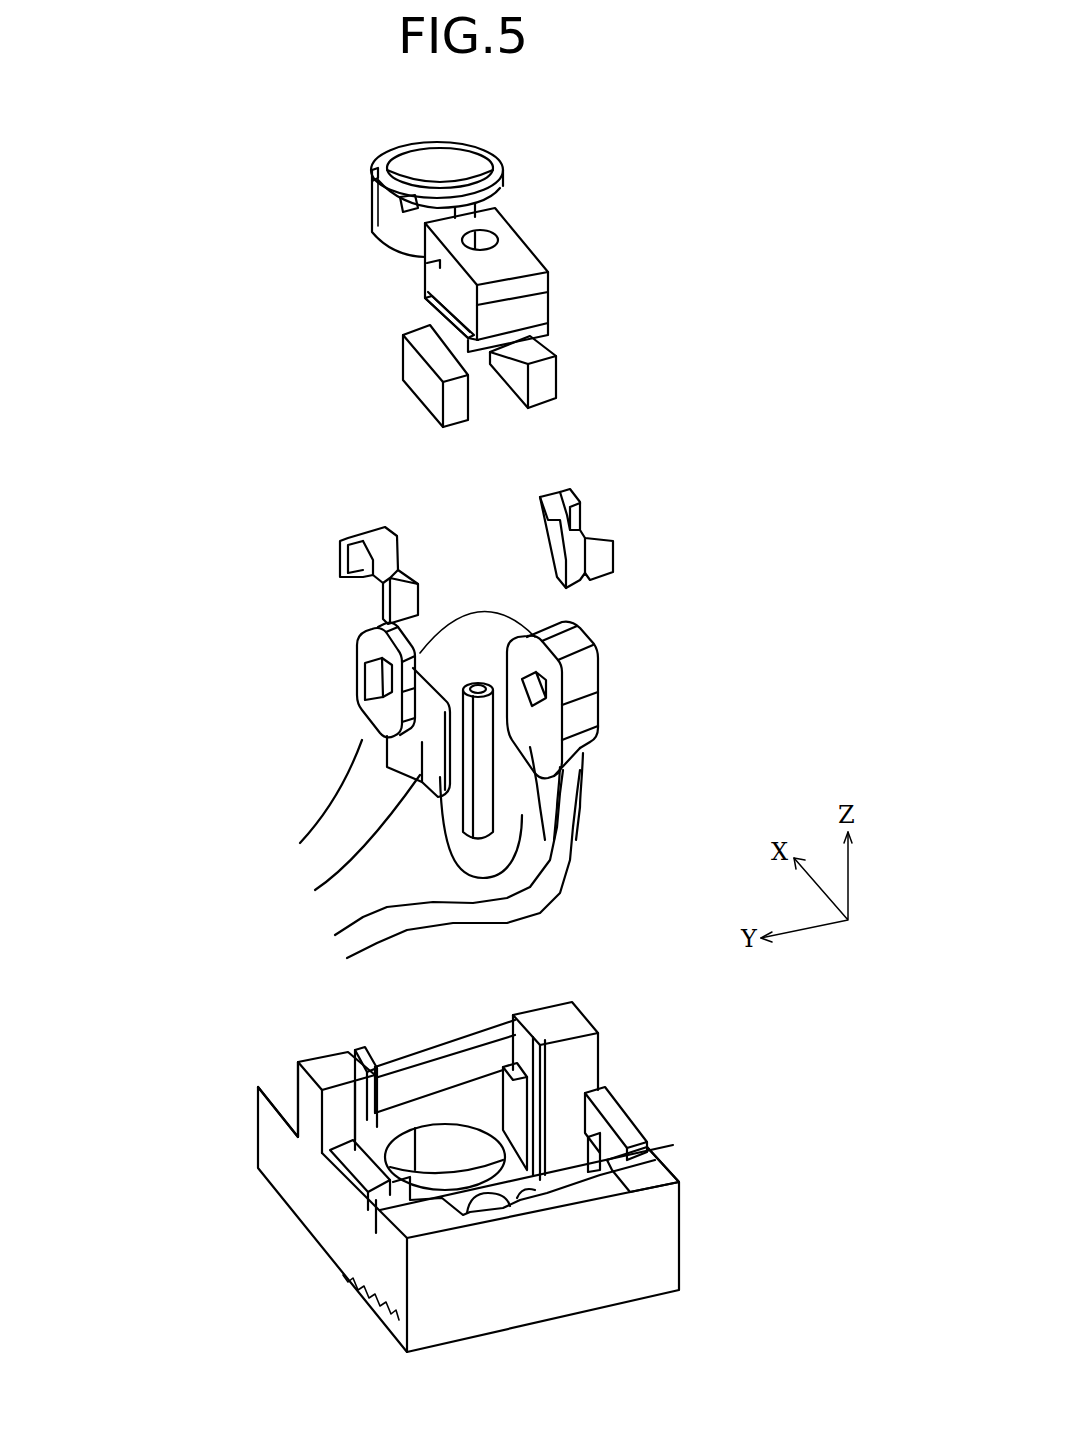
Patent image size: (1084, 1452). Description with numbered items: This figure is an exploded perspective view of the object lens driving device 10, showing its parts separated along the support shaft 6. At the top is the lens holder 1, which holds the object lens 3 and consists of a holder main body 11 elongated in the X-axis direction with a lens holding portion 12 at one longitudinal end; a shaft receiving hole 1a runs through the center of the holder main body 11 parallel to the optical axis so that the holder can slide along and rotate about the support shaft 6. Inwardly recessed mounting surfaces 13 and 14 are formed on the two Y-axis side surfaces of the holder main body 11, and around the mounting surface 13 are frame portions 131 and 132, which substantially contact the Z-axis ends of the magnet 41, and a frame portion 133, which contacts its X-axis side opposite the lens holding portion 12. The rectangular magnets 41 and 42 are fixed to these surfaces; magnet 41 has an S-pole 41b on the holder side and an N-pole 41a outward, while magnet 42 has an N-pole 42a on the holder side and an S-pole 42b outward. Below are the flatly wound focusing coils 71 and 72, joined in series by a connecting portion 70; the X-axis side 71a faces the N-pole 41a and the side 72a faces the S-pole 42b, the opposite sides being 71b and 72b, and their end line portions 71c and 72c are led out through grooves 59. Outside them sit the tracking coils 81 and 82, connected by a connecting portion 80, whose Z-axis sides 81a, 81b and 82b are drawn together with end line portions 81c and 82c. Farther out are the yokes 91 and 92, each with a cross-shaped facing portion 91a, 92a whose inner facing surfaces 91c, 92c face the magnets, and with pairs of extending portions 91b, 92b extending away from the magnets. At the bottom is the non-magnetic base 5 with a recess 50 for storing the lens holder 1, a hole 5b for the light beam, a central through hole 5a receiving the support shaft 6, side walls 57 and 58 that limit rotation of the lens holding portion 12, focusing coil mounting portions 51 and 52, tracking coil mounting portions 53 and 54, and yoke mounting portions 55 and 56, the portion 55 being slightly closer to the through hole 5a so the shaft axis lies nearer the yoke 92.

The lens holder 1 is at (270, 306).
The shaft receiving hole 1a is at (500, 238).
The object lens 3 is at (443, 155).
The base 5 is at (647, 1272).
The through hole 5a is at (490, 1207).
The hole 5b is at (448, 1143).
The support shaft 6 is at (488, 796).
The object lens driving device 10 is at (657, 222).
The holder main body 11 is at (548, 283).
The lens holding portion 12 is at (503, 167).
The mounting surface 13 is at (435, 292).
The mounting surface 14 is at (547, 331).
The magnet 41 is at (445, 426).
The N-pole 41a is at (404, 352).
The S-pole 41b is at (472, 408).
The magnet 42 is at (548, 404).
The N-pole 42a is at (522, 392).
The S-pole 42b is at (556, 372).
The recess 50 is at (557, 1207).
The focusing coil mounting portion 51 is at (350, 1068).
The focusing coil mounting portion 52 is at (532, 1112).
The tracking coil mounting portion 53 is at (370, 1190).
The tracking coil mounting portion 54 is at (640, 1177).
The yoke mounting portion 55 is at (333, 1150).
The yoke mounting portion 56 is at (633, 1147).
The side wall 57 is at (372, 1050).
The side wall 58 is at (513, 1035).
The groove 59 is at (355, 1303).
The connecting portion 70 is at (462, 867).
The focusing coil 71 is at (385, 763).
The side 71a is at (420, 692).
The side 71b is at (407, 767).
The end line portion 71c is at (337, 877).
The focusing coil 72 is at (567, 783).
The side 72a is at (527, 670).
The side 72b is at (533, 748).
The end line portion 72c is at (335, 935).
The connecting portion 80 is at (477, 612).
The tracking coil 81 is at (335, 662).
The side 81a is at (382, 706).
The side 81b is at (385, 675).
The end line portion 81c is at (312, 828).
The tracking coil 82 is at (603, 668).
The side 82b is at (600, 712).
The end line portion 82c is at (347, 958).
The yoke 91 is at (345, 528).
The facing portion 91a is at (373, 575).
The extending portion 91b is at (342, 553).
The facing surface 91c is at (402, 555).
The yoke 92 is at (628, 496).
The facing portion 92a is at (580, 520).
The extending portion 92b is at (563, 492).
The facing surface 92c is at (548, 513).
The frame portion 131 is at (436, 310).
The frame portion 132 is at (430, 262).
The frame portion 133 is at (505, 312).